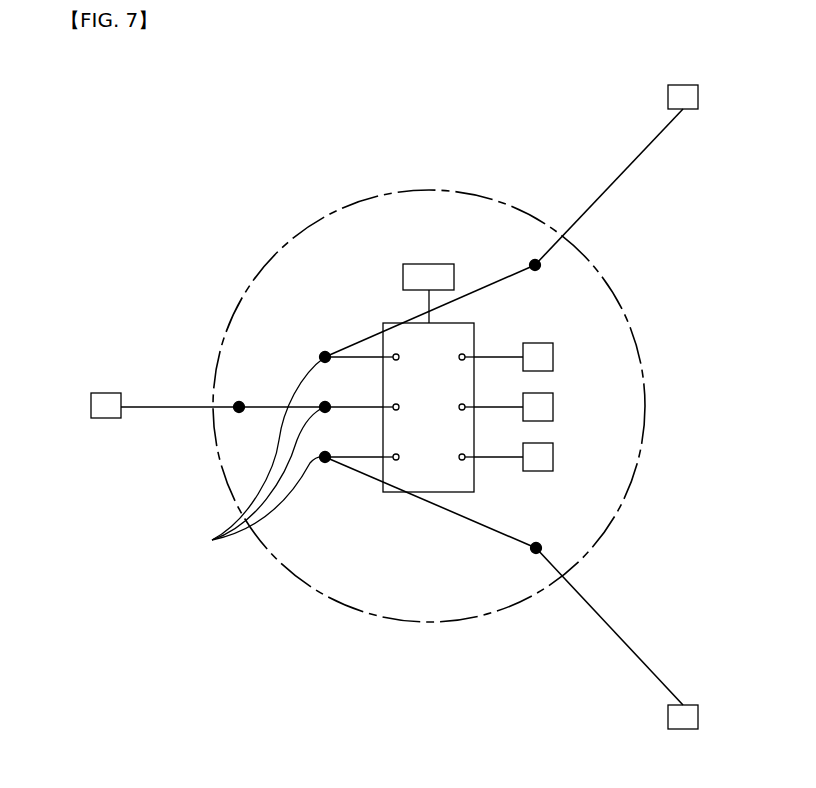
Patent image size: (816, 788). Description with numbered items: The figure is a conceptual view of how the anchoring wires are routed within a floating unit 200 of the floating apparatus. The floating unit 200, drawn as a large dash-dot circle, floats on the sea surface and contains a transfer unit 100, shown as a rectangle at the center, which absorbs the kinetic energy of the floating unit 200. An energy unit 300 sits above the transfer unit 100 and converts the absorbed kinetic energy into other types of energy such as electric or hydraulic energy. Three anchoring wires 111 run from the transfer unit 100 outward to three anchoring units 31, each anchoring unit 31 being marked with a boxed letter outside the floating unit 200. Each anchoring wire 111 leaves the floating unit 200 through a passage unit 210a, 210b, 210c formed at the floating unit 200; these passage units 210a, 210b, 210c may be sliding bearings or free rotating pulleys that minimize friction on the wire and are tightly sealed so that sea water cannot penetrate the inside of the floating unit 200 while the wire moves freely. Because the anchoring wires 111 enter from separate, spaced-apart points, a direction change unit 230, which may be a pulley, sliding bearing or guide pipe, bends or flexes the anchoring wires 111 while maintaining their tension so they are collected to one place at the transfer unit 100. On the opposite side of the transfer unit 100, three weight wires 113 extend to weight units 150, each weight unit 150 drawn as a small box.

The anchoring unit 31 is at (91, 400).
The transfer unit 100 is at (383, 323).
The anchoring wire 111 is at (182, 406).
The weight wire 113 is at (499, 357).
The weight unit 150 is at (554, 356).
The floating unit 200 is at (293, 233).
The passage unit 210a is at (239, 412).
The passage unit 210b is at (531, 553).
The passage unit 210c is at (545, 268).
The direction change unit 230 is at (250, 453).
The energy unit 300 is at (438, 264).